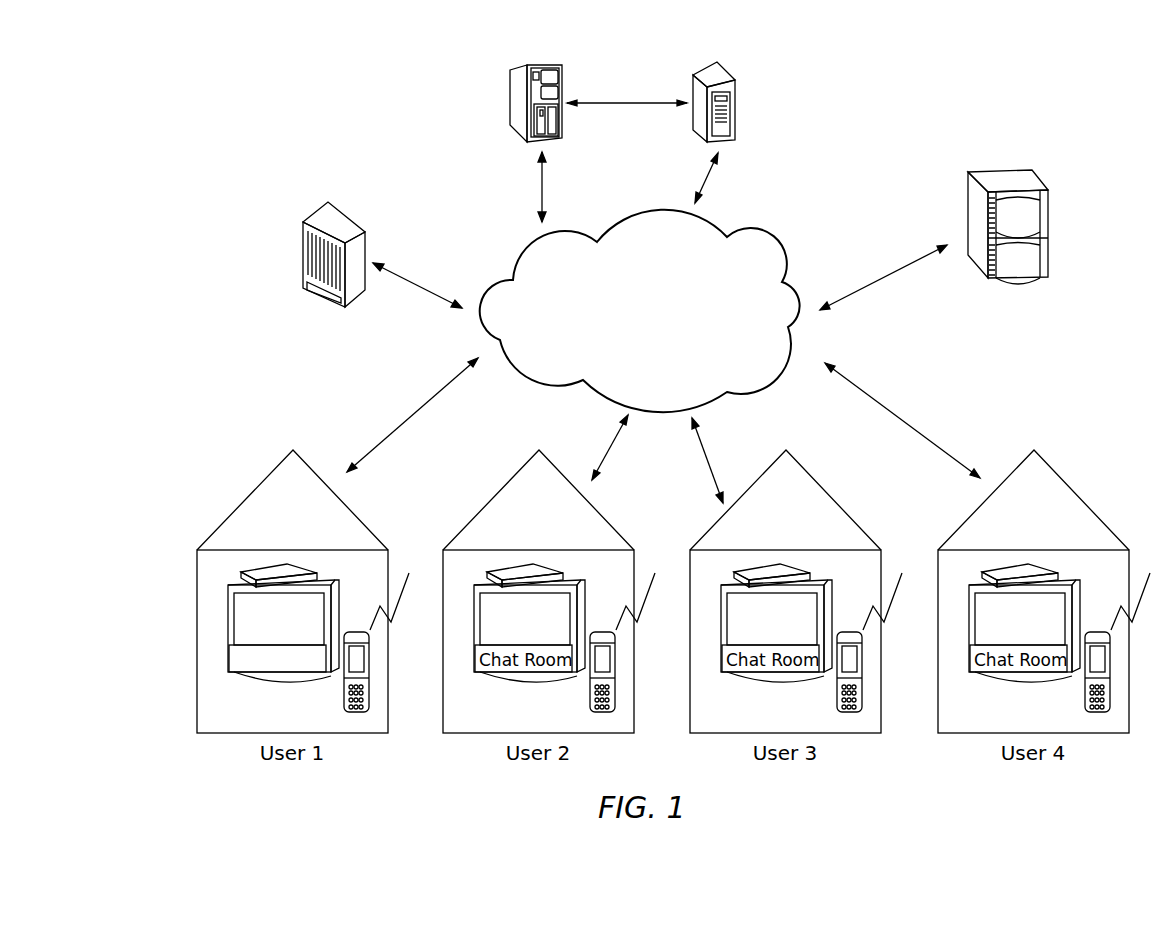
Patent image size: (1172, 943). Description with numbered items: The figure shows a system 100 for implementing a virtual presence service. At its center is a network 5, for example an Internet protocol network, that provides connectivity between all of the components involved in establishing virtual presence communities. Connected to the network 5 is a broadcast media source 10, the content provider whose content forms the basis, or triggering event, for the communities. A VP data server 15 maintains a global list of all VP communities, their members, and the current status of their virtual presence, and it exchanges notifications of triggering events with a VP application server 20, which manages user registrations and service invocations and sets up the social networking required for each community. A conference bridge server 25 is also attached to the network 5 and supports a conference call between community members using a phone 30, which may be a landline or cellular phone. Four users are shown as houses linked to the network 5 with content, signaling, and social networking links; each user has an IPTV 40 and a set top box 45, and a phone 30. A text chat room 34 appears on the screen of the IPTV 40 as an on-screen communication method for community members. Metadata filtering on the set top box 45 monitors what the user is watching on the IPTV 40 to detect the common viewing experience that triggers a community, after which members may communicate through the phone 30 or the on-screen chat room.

The system 100 is at (220, 128).
The network 5 is at (640, 311).
The broadcast media source 10 is at (995, 170).
The VP data server 15 is at (510, 91).
The VP application server 20 is at (738, 98).
The conference bridge server 25 is at (303, 240).
The phone 30 is at (366, 697).
The chat room display 34 is at (229, 657).
The IPTV 40 is at (245, 632).
The set top box 45 is at (258, 572).